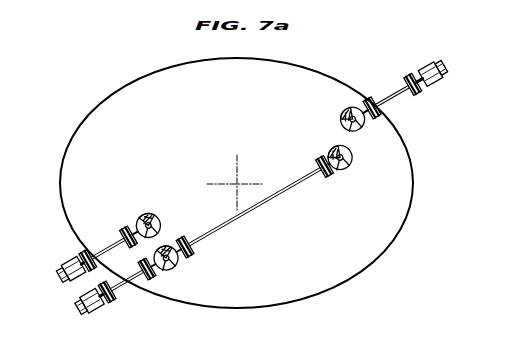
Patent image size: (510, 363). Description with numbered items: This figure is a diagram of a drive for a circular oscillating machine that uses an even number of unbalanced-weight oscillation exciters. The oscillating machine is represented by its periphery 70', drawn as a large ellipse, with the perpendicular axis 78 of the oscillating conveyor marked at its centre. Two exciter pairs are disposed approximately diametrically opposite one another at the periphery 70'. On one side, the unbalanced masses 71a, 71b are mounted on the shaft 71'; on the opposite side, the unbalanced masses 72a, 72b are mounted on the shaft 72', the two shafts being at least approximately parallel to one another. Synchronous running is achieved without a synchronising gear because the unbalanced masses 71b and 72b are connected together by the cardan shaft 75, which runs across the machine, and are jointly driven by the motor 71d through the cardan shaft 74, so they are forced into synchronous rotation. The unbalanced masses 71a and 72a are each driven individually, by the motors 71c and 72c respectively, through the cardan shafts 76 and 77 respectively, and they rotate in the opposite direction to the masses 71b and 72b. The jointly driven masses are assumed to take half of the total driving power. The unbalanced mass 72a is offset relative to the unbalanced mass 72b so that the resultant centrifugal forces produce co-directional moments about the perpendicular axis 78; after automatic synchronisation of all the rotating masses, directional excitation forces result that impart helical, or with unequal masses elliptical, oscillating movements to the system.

The periphery of the oscillating machine 70' is at (236, 183).
The shaft 71' is at (162, 240).
The unbalanced mass 71a is at (153, 214).
The unbalanced mass 71b is at (179, 263).
The motor 71c is at (63, 262).
The motor 71d is at (93, 312).
The shaft 72' is at (351, 138).
The unbalanced mass 72a is at (342, 116).
The unbalanced mass 72b is at (329, 152).
The motor 72c is at (441, 91).
The cardan shaft 74 is at (129, 283).
The cardan shaft 75 is at (269, 201).
The cardan shaft 76 is at (112, 245).
The cardan shaft 77 is at (393, 95).
The perpendicular axis 78 is at (233, 183).